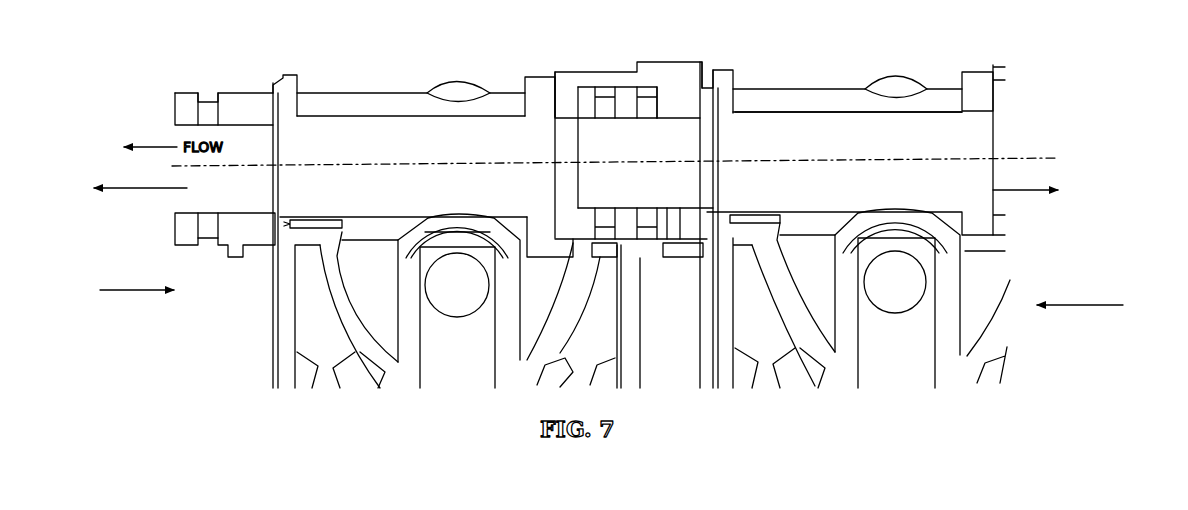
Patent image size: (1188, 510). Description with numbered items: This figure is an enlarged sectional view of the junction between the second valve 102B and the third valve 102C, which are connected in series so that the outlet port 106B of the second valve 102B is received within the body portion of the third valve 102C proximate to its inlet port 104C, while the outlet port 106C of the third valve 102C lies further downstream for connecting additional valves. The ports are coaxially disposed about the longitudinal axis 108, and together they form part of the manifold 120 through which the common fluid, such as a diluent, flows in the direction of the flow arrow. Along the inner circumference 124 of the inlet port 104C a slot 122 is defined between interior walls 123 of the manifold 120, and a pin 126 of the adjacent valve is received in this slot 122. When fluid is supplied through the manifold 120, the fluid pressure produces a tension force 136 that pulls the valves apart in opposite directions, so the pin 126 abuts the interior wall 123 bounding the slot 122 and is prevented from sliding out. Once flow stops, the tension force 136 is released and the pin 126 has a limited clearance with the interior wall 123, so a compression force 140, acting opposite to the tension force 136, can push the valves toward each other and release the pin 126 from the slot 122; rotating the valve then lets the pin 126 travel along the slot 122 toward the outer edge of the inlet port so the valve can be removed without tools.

The second valve 102B is at (783, 89).
The third valve 102C is at (367, 93).
The inlet port of the third valve 104C is at (674, 94).
The outlet port of the second valve 106B is at (580, 181).
The outlet port of the third valve 106C is at (170, 100).
The longitudinal axis 108 is at (1048, 158).
The manifold 120 is at (820, 113).
The slot 122 is at (604, 87).
The interior wall 123 is at (684, 248).
The inner circumference 124 is at (701, 92).
The pin 126 is at (673, 248).
The tension force 136 is at (147, 190).
The compression force 140 is at (103, 293).